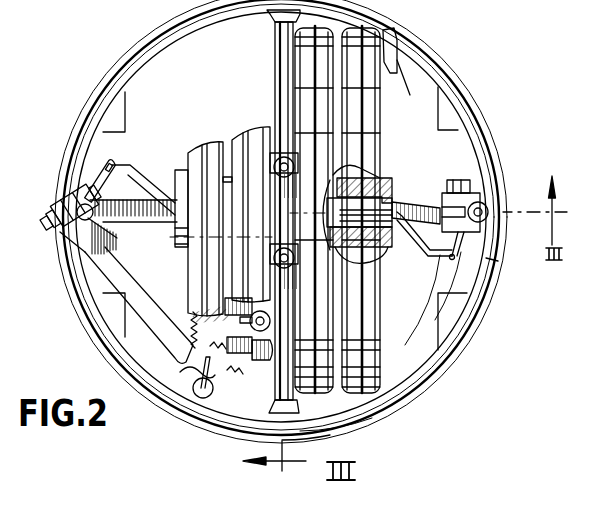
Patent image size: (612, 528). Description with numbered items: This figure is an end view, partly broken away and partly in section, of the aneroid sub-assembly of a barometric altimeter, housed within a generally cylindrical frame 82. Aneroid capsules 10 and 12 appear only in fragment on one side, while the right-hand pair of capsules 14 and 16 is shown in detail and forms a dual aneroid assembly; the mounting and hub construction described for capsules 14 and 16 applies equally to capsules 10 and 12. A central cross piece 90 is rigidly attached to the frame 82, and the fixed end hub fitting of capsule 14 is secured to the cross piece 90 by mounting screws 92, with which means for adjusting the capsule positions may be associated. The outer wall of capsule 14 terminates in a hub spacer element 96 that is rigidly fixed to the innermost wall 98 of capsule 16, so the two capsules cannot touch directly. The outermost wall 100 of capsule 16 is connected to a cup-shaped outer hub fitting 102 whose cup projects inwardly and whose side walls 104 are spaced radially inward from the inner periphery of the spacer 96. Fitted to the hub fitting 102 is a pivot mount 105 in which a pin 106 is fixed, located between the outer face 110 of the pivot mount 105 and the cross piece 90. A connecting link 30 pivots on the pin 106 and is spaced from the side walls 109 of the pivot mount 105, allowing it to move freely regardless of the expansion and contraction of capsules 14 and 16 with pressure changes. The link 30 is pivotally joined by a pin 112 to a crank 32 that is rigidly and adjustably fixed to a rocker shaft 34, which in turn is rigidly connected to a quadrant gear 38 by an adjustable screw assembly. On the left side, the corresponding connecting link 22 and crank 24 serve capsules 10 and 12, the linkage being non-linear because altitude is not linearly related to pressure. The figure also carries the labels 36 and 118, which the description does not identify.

The aneroid capsule 10 is at (200, 152).
The aneroid capsule 12 is at (247, 140).
The aneroid capsule 14 is at (315, 448).
The aneroid capsule 16 is at (399, 403).
The connecting link 22 is at (115, 167).
The crank 24 is at (95, 190).
The connecting link 30 is at (488, 277).
The crank 32 is at (460, 245).
The rocker shaft 34 is at (488, 210).
The spoke 36 is at (105, 247).
The quadrant gear 38 is at (390, 48).
The generally cylindrical frame 82 is at (449, 357).
The central cross piece 90 is at (280, 378).
The mounting screws 92 is at (262, 254).
The hub spacer element 96 is at (371, 416).
The innermost wall 98 is at (431, 378).
The outermost wall 100 is at (432, 328).
The outer hub fitting 102 is at (442, 306).
The side walls 104 is at (375, 178).
The pivot mount 105 is at (406, 203).
The pin 106 is at (383, 197).
The side walls 109 is at (452, 180).
The outer face 110 is at (450, 257).
The pin 112 is at (486, 258).
The fitting 118 is at (55, 224).